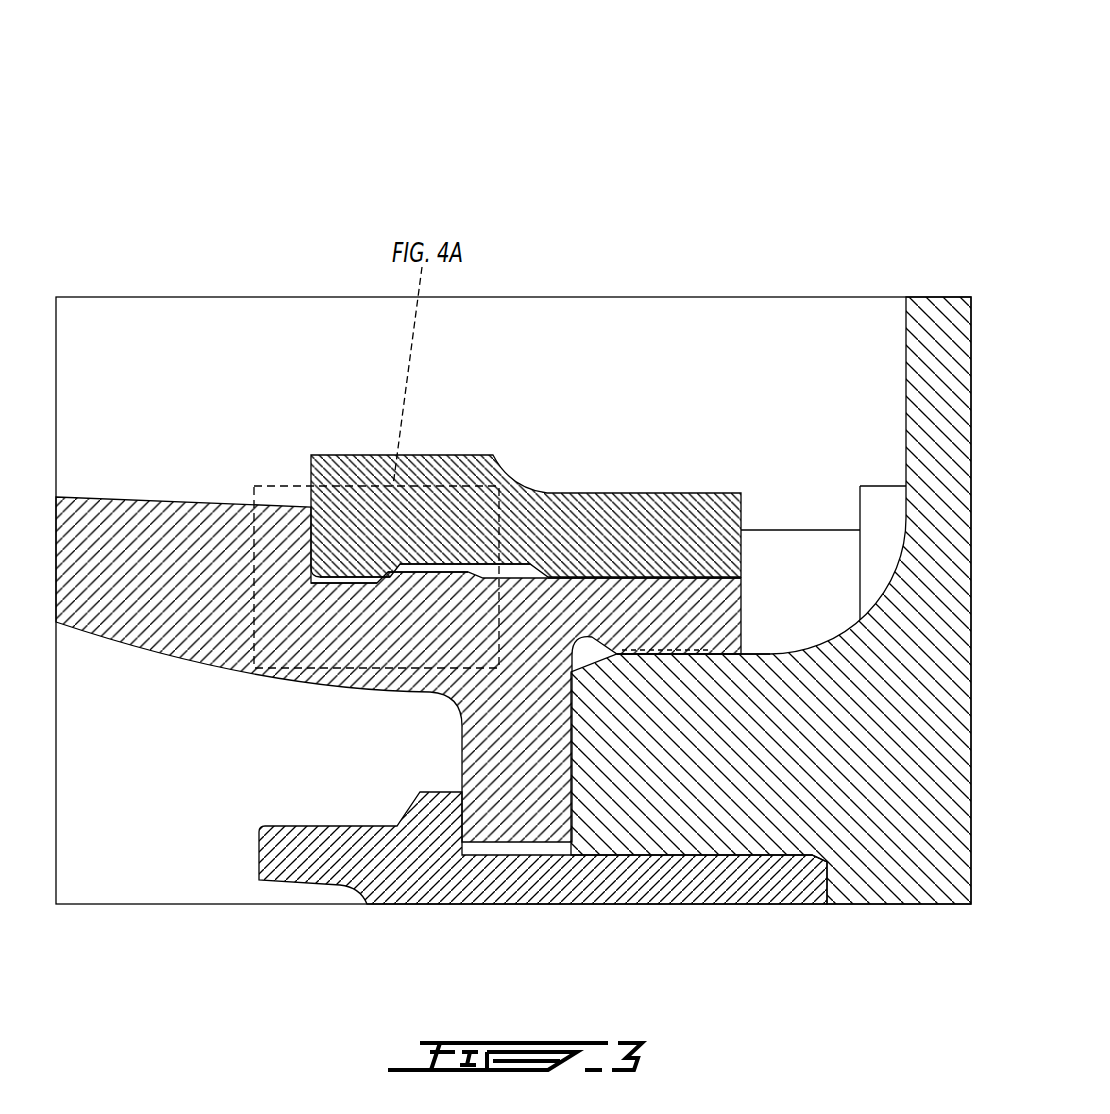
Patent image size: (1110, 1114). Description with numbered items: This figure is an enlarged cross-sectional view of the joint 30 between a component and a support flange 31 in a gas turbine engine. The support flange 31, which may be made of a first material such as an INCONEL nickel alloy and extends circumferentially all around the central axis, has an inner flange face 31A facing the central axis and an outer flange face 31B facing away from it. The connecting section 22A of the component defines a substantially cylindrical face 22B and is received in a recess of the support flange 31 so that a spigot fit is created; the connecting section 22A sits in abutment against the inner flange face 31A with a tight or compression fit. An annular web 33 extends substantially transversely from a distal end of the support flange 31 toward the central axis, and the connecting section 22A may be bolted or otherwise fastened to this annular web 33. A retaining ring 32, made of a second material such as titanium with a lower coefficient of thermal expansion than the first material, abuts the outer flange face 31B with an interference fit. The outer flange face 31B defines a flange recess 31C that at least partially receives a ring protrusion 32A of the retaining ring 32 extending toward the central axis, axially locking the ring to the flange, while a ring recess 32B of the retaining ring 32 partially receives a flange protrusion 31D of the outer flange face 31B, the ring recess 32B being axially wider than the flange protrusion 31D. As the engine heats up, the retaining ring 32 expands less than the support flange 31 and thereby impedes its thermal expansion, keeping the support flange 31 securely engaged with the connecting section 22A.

The sealing assembly 30 is at (683, 190).
The support flange 31 is at (186, 575).
The inner flange face 31A is at (683, 653).
The outer flange face 31B is at (675, 577).
The flange recess 31C is at (340, 583).
The flange protrusion 31D is at (423, 577).
The retaining ring 32 is at (612, 493).
The ring protrusion 32A is at (352, 560).
The ring recess 32B is at (463, 560).
The annular web 33 is at (518, 768).
The connecting section 22A is at (673, 680).
The cylindrical face 22B is at (702, 807).